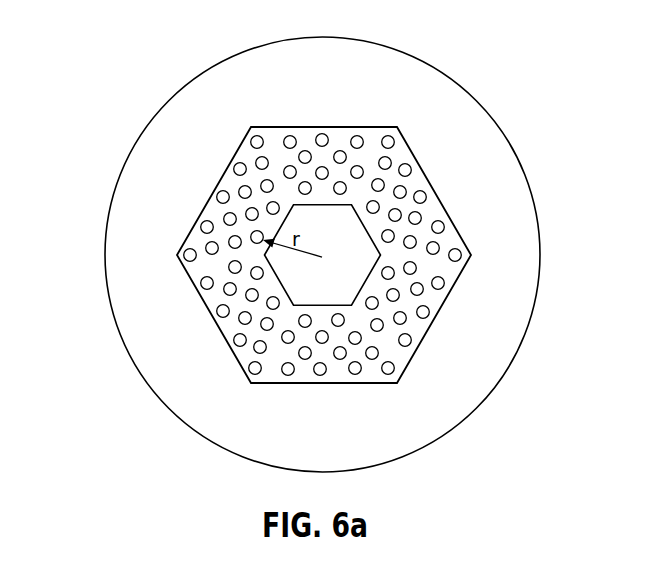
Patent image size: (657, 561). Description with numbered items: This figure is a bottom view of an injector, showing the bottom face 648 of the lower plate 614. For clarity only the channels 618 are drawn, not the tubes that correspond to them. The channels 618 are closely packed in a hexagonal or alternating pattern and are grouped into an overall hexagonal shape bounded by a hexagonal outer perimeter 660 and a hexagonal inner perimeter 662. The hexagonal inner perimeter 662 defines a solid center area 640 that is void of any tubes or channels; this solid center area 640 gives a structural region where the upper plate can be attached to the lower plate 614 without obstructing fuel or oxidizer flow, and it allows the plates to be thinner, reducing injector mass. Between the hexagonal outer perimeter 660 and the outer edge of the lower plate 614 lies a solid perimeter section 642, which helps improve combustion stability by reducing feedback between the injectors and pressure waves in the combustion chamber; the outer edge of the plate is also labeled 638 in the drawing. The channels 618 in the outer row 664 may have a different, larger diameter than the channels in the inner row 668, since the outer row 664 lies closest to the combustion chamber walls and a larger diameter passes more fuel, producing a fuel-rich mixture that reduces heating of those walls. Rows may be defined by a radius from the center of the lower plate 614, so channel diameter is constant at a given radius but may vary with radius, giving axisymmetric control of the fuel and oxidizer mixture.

The lower plate 614 is at (498, 93).
The bottom face 648 is at (170, 140).
The hexagonal outer perimeter 660 is at (285, 127).
The inner row 668 is at (382, 202).
The hexagonal inner perimeter 662 is at (287, 214).
The solid center area 640 is at (342, 290).
The solid perimeter section 642 is at (343, 436).
The outer row 664 is at (199, 289).
The channels 618 is at (216, 312).
The outer wall 638 is at (493, 365).